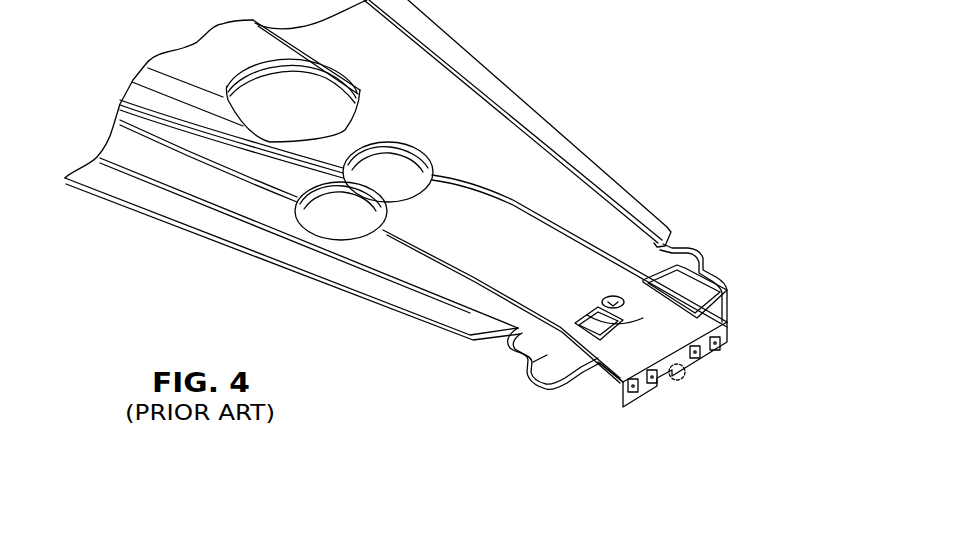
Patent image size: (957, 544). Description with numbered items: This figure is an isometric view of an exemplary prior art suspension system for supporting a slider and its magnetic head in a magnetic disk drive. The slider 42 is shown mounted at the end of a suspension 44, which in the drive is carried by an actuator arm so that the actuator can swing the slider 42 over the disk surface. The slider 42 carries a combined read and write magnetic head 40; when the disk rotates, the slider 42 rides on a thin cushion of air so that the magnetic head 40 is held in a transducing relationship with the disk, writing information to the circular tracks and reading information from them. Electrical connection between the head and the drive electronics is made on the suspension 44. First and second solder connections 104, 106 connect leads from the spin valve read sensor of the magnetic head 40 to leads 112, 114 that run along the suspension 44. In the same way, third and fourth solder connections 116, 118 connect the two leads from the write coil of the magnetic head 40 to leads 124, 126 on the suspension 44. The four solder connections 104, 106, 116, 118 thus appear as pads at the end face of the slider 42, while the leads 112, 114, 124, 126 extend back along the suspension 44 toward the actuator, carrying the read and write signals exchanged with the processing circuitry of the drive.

The magnetic head 40 is at (684, 380).
The slider 42 is at (572, 400).
The suspension 44 is at (538, 103).
The first solder connection 104 is at (632, 393).
The second solder connection 106 is at (720, 343).
The lead 112 is at (407, 252).
The lead 114 is at (587, 237).
The third solder connection 116 is at (652, 384).
The fourth solder connection 118 is at (698, 358).
The lead 124 is at (455, 267).
The lead 126 is at (508, 205).